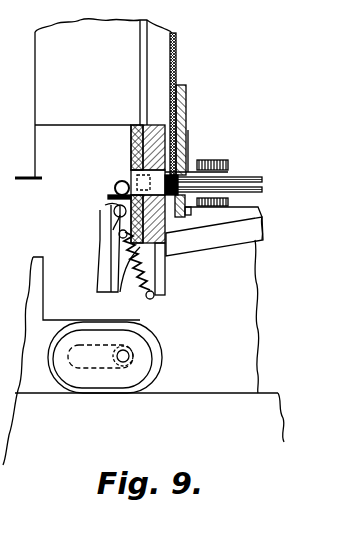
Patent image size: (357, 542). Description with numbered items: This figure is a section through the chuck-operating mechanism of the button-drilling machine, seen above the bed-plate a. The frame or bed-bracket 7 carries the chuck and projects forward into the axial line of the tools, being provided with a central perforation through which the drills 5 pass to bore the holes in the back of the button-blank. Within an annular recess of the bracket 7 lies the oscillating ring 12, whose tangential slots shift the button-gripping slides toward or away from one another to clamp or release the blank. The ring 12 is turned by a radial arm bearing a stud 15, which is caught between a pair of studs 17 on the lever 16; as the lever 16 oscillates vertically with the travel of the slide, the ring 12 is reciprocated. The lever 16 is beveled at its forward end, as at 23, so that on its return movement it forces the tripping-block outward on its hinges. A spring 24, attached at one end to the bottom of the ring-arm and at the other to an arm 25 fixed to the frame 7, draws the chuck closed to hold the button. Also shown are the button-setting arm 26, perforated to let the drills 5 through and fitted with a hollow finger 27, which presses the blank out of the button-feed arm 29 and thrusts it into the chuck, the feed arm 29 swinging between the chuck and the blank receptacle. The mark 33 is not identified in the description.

The drills 5 is at (263, 178).
The frame or bed-bracket 7 is at (152, 125).
The oscillating ring 12 is at (130, 148).
The stud 15 is at (108, 194).
The lever 16 is at (107, 218).
The studs 17 is at (118, 182).
The beveled forward end 23 is at (103, 270).
The spring 24 is at (143, 288).
The arm 25 is at (165, 283).
The button-setting arm 26 is at (222, 160).
The hollow finger 27 is at (192, 165).
The button-feed arm 29 is at (187, 112).
The casing 33 is at (216, 297).
The bed-plate a is at (19, 430).